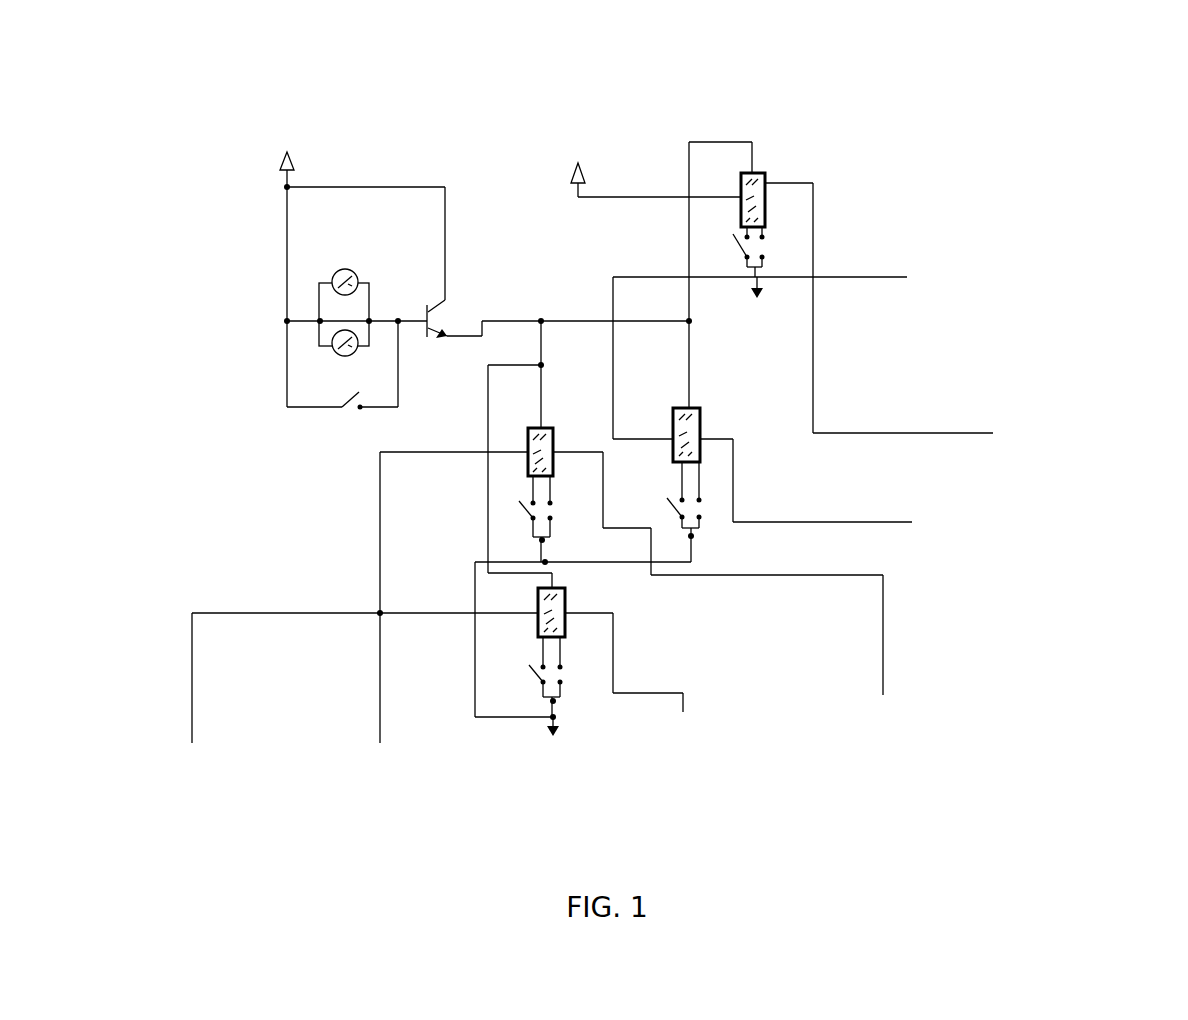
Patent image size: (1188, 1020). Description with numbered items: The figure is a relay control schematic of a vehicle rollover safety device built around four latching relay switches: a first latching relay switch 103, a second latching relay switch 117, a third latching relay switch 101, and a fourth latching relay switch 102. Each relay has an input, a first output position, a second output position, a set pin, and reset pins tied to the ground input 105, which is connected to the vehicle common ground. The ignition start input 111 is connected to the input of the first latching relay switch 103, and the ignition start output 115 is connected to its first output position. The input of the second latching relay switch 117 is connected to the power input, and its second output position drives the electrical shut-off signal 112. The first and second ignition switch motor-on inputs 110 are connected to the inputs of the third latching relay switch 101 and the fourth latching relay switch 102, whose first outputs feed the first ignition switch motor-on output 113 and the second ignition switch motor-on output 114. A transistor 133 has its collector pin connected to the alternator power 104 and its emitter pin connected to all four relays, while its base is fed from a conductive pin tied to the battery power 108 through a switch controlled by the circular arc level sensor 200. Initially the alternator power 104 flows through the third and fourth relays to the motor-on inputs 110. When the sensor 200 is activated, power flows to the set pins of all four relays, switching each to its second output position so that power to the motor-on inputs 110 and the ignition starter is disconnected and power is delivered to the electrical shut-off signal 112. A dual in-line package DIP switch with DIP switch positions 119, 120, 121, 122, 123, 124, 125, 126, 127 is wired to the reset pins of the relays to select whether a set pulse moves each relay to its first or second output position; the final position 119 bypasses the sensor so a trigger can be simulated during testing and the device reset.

The third latching relay switch 101 is at (532, 609).
The fourth latching relay switch 102 is at (555, 441).
The first latching relay switch 103 is at (667, 433).
The alternator power 104 is at (290, 100).
The ground input 105 is at (529, 702).
The battery power 108 is at (622, 126).
The first and second ignition switch motor-on inputs 110 is at (330, 664).
The ignition start input 111 is at (822, 330).
The electrical shut-off signal 112 is at (968, 336).
The first ignition switch motor-on output 113 is at (657, 715).
The second ignition switch motor-on output 114 is at (753, 629).
The ignition start output 115 is at (882, 528).
The second latching relay switch 117 is at (770, 187).
The DIP switch position 119 is at (342, 389).
The DIP switch position 120 is at (518, 667).
The DIP switch position 121 is at (582, 667).
The DIP switch position 122 is at (516, 509).
The DIP switch position 123 is at (572, 509).
The DIP switch position 124 is at (653, 495).
The DIP switch position 125 is at (723, 504).
The DIP switch position 126 is at (724, 247).
The DIP switch position 127 is at (784, 247).
The transistor 133 is at (456, 314).
The circular arc level sensor 200 is at (364, 297).